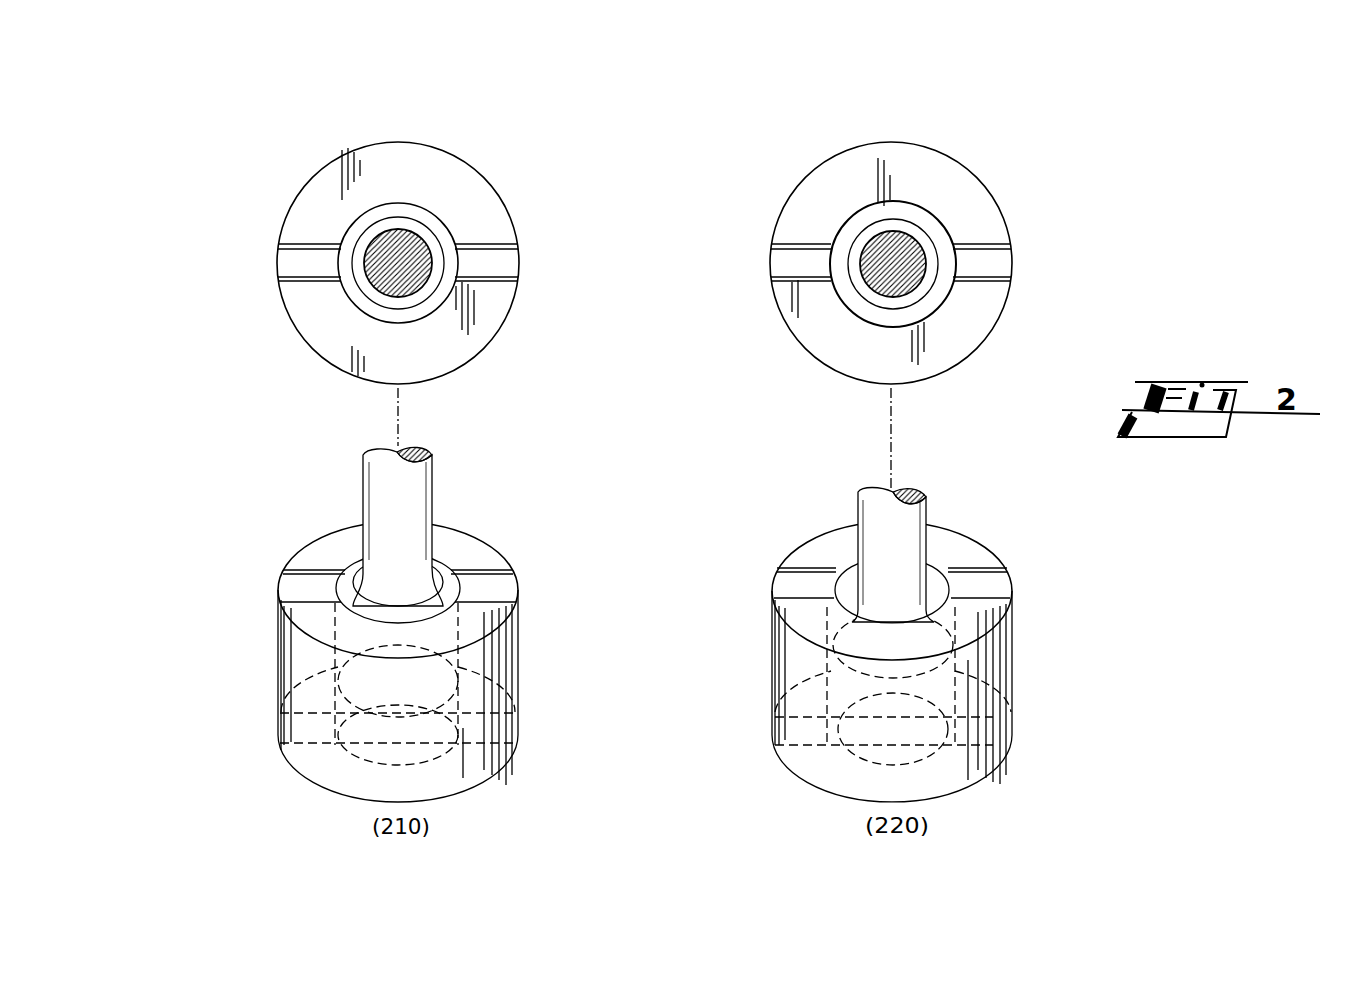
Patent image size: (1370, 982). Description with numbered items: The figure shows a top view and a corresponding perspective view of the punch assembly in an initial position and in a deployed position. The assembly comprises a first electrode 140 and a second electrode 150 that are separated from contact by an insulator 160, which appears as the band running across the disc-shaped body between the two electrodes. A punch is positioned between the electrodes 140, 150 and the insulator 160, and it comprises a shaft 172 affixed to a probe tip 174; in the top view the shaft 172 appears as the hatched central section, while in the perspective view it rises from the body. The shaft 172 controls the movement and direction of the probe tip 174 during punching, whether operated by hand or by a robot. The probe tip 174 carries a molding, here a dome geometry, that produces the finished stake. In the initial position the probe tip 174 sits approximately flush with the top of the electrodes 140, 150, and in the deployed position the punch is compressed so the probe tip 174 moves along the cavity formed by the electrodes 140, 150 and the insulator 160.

The first electrode 140 is at (458, 352).
The second electrode 150 is at (500, 225).
The insulator 160 is at (283, 263).
The shaft 172 is at (402, 237).
The probe tip 174 is at (352, 228).